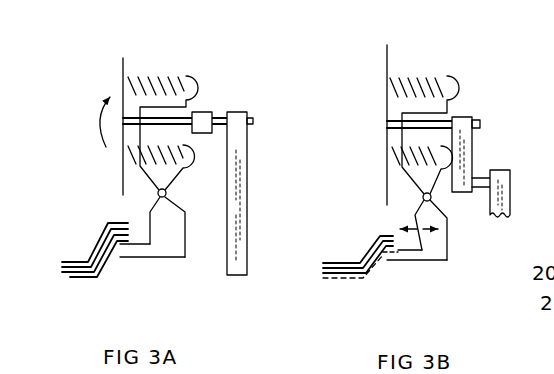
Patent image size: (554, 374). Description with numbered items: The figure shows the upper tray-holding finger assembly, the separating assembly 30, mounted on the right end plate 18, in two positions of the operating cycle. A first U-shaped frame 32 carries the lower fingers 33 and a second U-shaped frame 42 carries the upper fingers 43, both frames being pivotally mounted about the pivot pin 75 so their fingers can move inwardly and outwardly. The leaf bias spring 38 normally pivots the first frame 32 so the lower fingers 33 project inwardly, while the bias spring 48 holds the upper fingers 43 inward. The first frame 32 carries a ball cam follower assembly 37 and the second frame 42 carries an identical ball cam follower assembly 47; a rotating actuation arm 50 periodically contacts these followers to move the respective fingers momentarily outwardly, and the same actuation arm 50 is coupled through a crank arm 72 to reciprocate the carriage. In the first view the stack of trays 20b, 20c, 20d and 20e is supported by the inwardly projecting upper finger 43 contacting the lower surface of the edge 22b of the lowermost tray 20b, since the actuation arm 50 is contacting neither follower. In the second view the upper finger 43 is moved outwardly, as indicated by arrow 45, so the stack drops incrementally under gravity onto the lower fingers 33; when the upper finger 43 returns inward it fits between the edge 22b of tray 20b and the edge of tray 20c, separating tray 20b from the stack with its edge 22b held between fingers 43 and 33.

In FIG. 3A, the end plate 18 is at (126, 67).
In FIG. 3B, the end plate 18 is at (389, 53).
In FIG. 3A, the leaf bias spring 38 is at (161, 78).
In FIG. 3B, the leaf bias spring 38 is at (416, 78).
In FIG. 3A, the separating assembly 30 is at (196, 58).
In FIG. 3B, the separating assembly 30 is at (461, 65).
In FIG. 3A, the ball cam follower assembly 37 is at (198, 88).
In FIG. 3B, the ball cam follower assembly 37 is at (463, 85).
In FIG. 3A, the actuation arm 50 is at (206, 112).
In FIG. 3B, the actuation arm 50 is at (474, 141).
In FIG. 3A, the crank arm 72 is at (250, 157).
In FIG. 3B, the crank arm 72 is at (510, 172).
In FIG. 3A, the bias spring 48 is at (153, 163).
In FIG. 3B, the bias spring 48 is at (415, 160).
In FIG. 3A, the ball cam follower assembly 47 is at (196, 161).
In FIG. 3B, the ball cam follower assembly 47 is at (446, 170).
In FIG. 3A, the pivot pin 75 is at (157, 193).
In FIG. 3B, the pivot pin 75 is at (423, 196).
In FIG. 3A, the second U-shaped frame 42 is at (148, 208).
In FIG. 3B, the second U-shaped frame 42 is at (412, 209).
In FIG. 3A, the first U-shaped frame 32 is at (187, 212).
In FIG. 3B, the first U-shaped frame 32 is at (435, 214).
In FIG. 3B, the arrow 45 is at (434, 234).
In FIG. 3A, the lower fingers 33 is at (176, 258).
In FIG. 3B, the lower fingers 33 is at (443, 262).
In FIG. 3A, the upper fingers 43 is at (128, 247).
In FIG. 3B, the upper fingers 43 is at (410, 259).
In FIG. 3A, the tray 20e is at (99, 252).
In FIG. 3B, the tray 20e is at (351, 262).
In FIG. 3A, the tray 20d is at (70, 262).
In FIG. 3B, the tray 20d is at (322, 264).
In FIG. 3A, the tray 20c is at (68, 270).
In FIG. 3B, the tray 20c is at (322, 273).
In FIG. 3A, the tray 20b is at (101, 279).
In FIG. 3B, the tray 20b is at (346, 282).
In FIG. 3A, the edge of tray 22b is at (131, 247).
In FIG. 3B, the edge of tray 22b is at (382, 258).